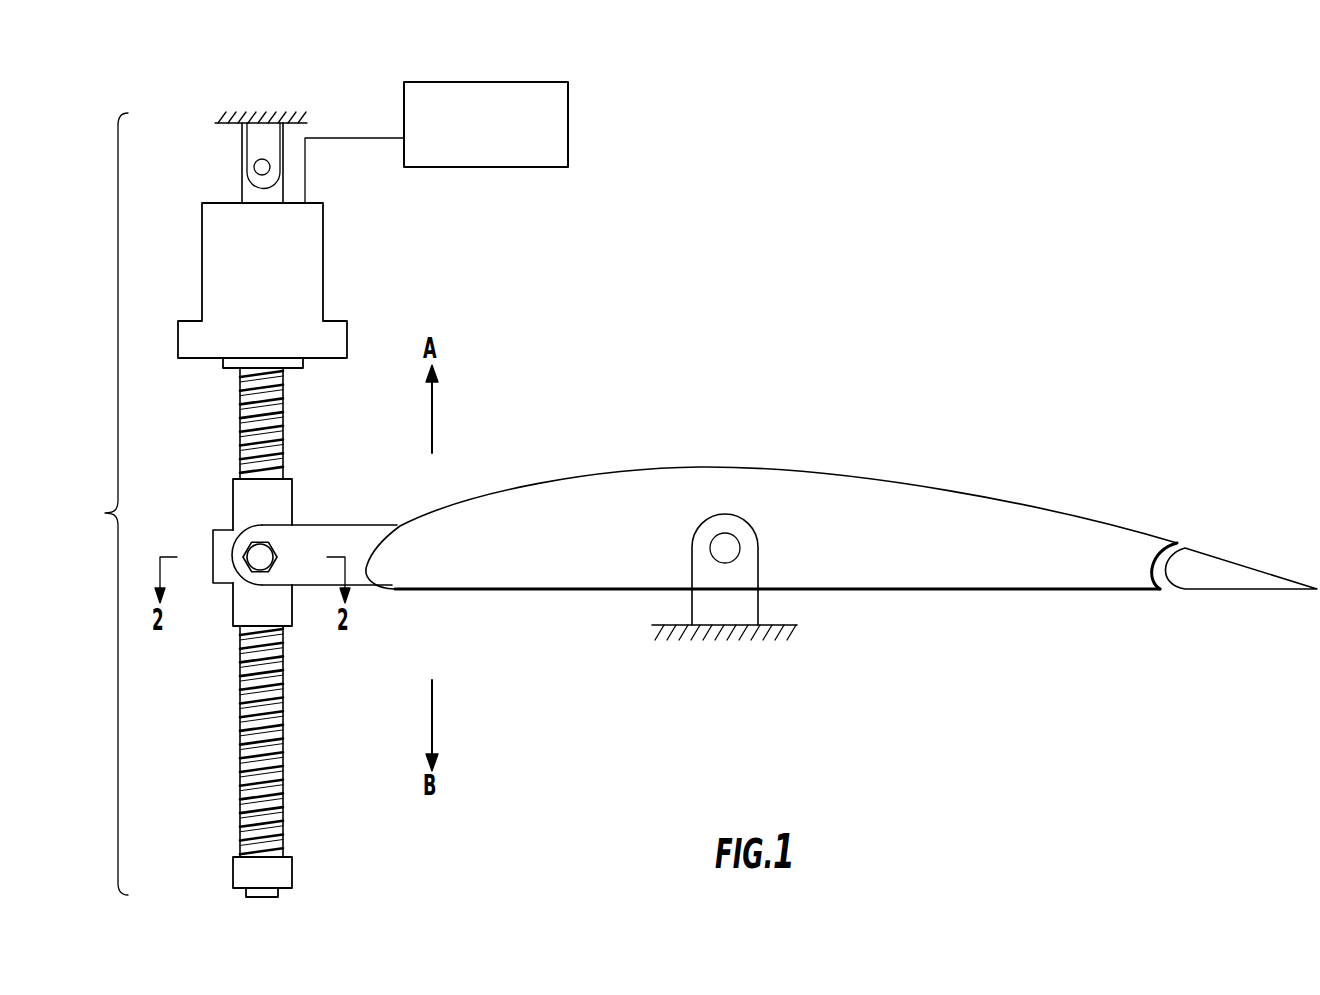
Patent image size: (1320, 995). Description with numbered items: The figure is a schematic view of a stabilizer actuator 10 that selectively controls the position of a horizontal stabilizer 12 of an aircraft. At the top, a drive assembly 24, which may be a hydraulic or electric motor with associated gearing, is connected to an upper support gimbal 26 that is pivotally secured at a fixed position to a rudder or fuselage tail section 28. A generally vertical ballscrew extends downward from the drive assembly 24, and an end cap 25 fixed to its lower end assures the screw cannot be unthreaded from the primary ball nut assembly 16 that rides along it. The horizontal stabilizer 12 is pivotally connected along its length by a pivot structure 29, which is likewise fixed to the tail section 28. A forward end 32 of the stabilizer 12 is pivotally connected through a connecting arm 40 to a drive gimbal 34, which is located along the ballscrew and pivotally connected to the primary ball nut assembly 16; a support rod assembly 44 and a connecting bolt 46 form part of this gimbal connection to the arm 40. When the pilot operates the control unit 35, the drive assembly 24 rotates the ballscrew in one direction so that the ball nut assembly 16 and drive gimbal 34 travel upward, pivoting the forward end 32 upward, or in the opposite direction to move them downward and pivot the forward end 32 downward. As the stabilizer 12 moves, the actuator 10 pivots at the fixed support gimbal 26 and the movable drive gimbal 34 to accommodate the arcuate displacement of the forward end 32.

The stabilizer actuator 10 is at (101, 504).
The horizontal stabilizer 12 is at (732, 468).
The primary ball nut assembly 16 is at (292, 503).
The drive assembly 24 is at (202, 267).
The end cap 25 is at (233, 873).
The upper support gimbal 26 is at (242, 148).
The tail section 28 is at (267, 110).
The pivot structure 29 is at (740, 548).
The forward end 32 is at (403, 552).
The drive gimbal 34 is at (212, 557).
The control unit 35 is at (512, 167).
The connecting arm 40 is at (335, 548).
The support rod assembly 44 is at (260, 573).
The connecting bolt 46 is at (283, 558).